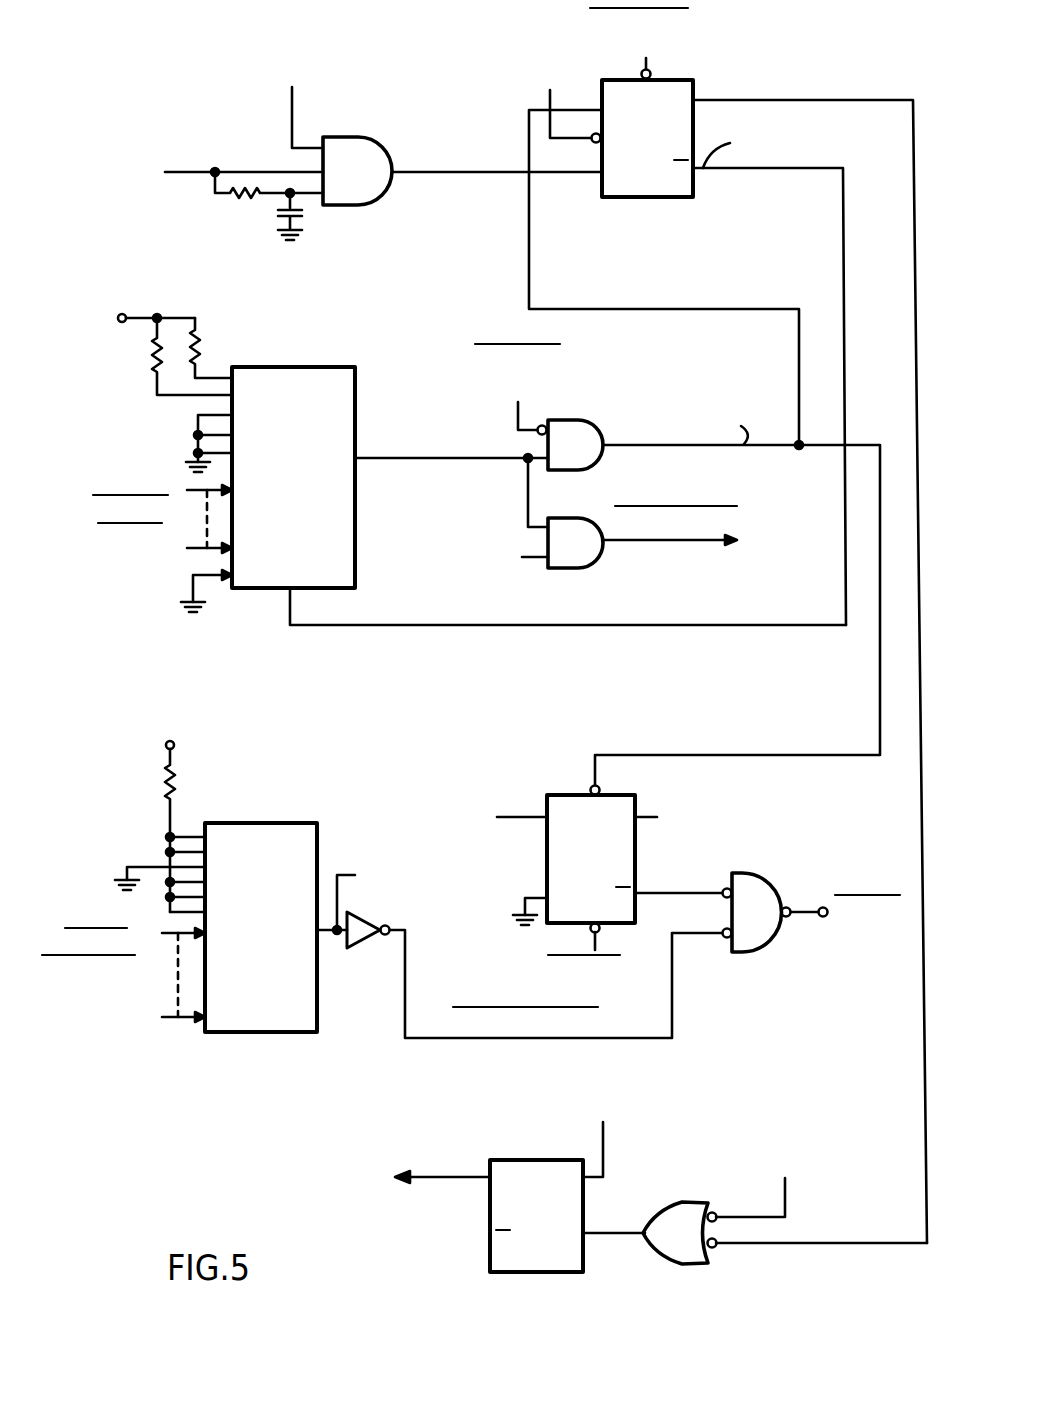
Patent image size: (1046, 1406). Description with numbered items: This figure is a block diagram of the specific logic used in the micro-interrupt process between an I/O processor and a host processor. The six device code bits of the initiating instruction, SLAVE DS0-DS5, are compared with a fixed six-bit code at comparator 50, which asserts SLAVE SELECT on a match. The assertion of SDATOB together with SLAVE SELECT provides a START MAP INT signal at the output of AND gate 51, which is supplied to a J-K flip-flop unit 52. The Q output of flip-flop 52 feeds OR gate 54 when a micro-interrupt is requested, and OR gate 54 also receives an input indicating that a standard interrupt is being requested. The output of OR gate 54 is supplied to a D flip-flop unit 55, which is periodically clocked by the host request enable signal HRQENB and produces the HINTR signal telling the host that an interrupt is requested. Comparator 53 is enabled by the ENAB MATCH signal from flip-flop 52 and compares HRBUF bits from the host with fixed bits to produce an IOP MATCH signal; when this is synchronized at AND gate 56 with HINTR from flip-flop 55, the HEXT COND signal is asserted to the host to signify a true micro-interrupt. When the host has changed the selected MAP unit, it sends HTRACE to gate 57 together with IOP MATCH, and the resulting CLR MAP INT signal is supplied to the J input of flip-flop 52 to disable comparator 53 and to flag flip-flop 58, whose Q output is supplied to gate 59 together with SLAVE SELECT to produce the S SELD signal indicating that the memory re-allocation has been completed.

The comparator 50 is at (262, 823).
The AND gate 51 is at (357, 145).
The J-K flip-flop unit 52 is at (683, 90).
The comparator 53 is at (280, 377).
The OR gate 54 is at (665, 1248).
The D flip-flop unit 55 is at (490, 1205).
The AND gate 56 is at (577, 520).
The gate 57 is at (591, 419).
The flag flip-flop 58 is at (627, 853).
The gate 59 is at (763, 895).